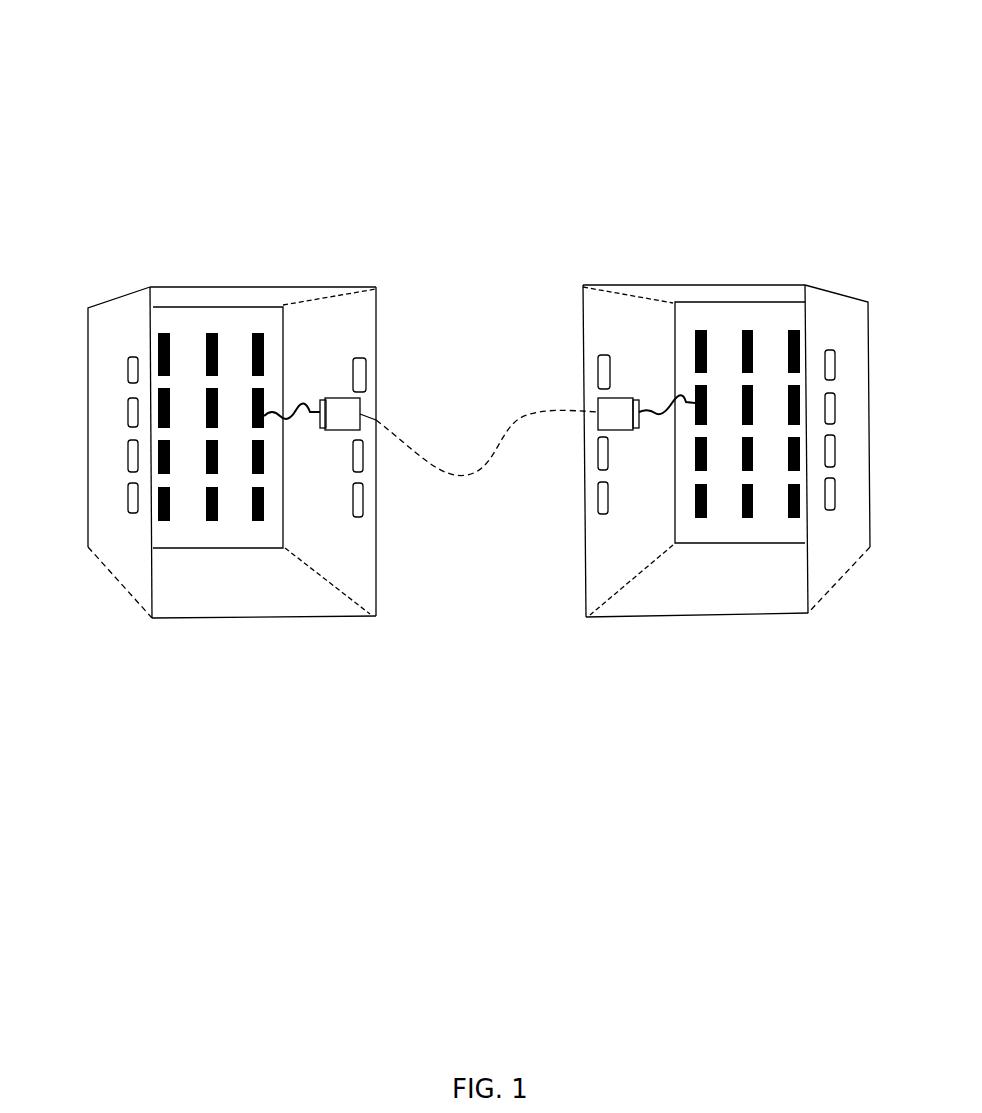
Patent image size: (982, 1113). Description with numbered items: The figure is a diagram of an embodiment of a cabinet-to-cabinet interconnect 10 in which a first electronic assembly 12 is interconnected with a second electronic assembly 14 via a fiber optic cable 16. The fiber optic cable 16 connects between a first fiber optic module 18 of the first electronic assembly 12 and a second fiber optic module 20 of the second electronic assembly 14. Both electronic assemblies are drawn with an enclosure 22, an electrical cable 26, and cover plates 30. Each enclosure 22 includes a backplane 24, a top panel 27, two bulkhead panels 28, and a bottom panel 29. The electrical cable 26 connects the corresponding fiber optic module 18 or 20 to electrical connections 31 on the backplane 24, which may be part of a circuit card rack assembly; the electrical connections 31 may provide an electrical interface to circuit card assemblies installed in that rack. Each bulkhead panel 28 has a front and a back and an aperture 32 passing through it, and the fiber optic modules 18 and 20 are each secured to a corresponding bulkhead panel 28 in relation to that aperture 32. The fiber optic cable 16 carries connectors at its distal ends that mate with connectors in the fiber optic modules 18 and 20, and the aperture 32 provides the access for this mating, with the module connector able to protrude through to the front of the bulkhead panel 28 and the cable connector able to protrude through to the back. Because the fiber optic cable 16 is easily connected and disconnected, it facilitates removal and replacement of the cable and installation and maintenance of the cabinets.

The cabinet-to-cabinet interconnect 10 is at (227, 70).
The first electronic assembly 12 is at (170, 200).
The second electronic assembly 14 is at (620, 198).
The fiber optic cable 16 is at (463, 467).
The first fiber optic module 18 is at (350, 418).
The second fiber optic module 20 is at (600, 431).
The enclosure 22 is at (386, 259).
The backplane 24 is at (238, 520).
The electrical cable 26 is at (296, 406).
The top panel 27 is at (258, 287).
The bulkhead panel 28 is at (122, 322).
The bottom panel 29 is at (263, 620).
The cover plates 30 is at (135, 512).
The electrical connections 31 is at (261, 386).
The aperture 32 is at (585, 373).